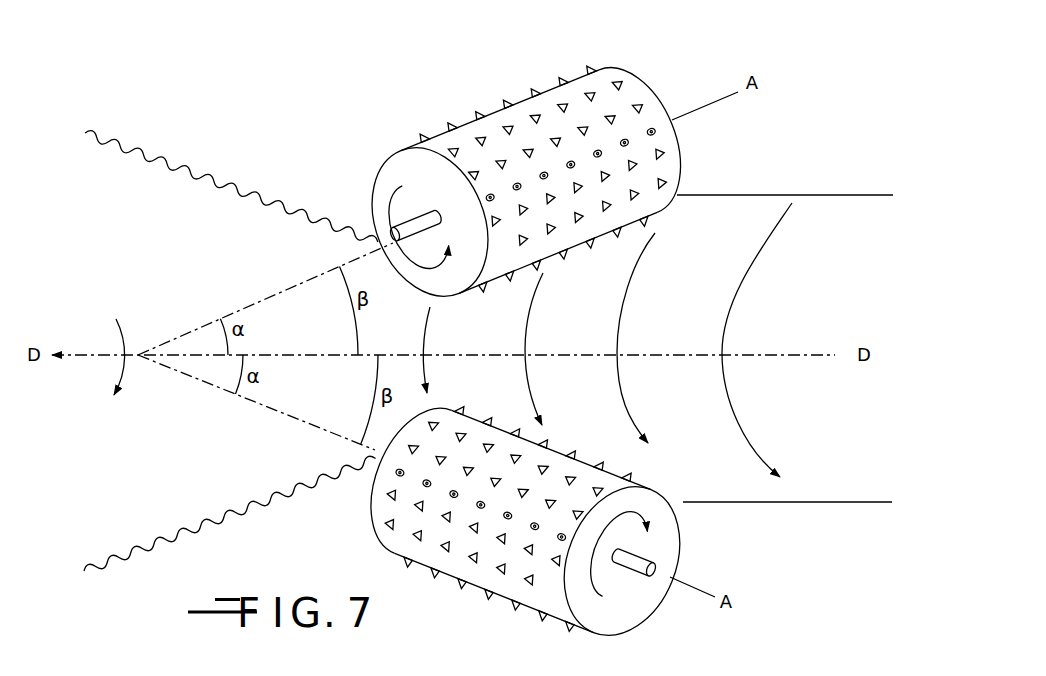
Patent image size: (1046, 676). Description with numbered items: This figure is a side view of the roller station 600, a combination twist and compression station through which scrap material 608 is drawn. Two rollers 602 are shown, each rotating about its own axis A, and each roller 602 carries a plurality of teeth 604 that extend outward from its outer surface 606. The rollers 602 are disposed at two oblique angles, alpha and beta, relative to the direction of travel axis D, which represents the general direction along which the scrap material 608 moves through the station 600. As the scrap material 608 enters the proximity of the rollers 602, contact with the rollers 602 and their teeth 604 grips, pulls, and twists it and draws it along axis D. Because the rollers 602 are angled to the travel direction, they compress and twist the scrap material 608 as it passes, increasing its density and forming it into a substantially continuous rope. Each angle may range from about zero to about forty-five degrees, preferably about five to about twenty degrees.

The roller station 600 is at (783, 108).
The roller 602 is at (665, 162).
The teeth 604 is at (618, 85).
The outer surface 606 is at (495, 127).
The scrap material 608 is at (160, 197).